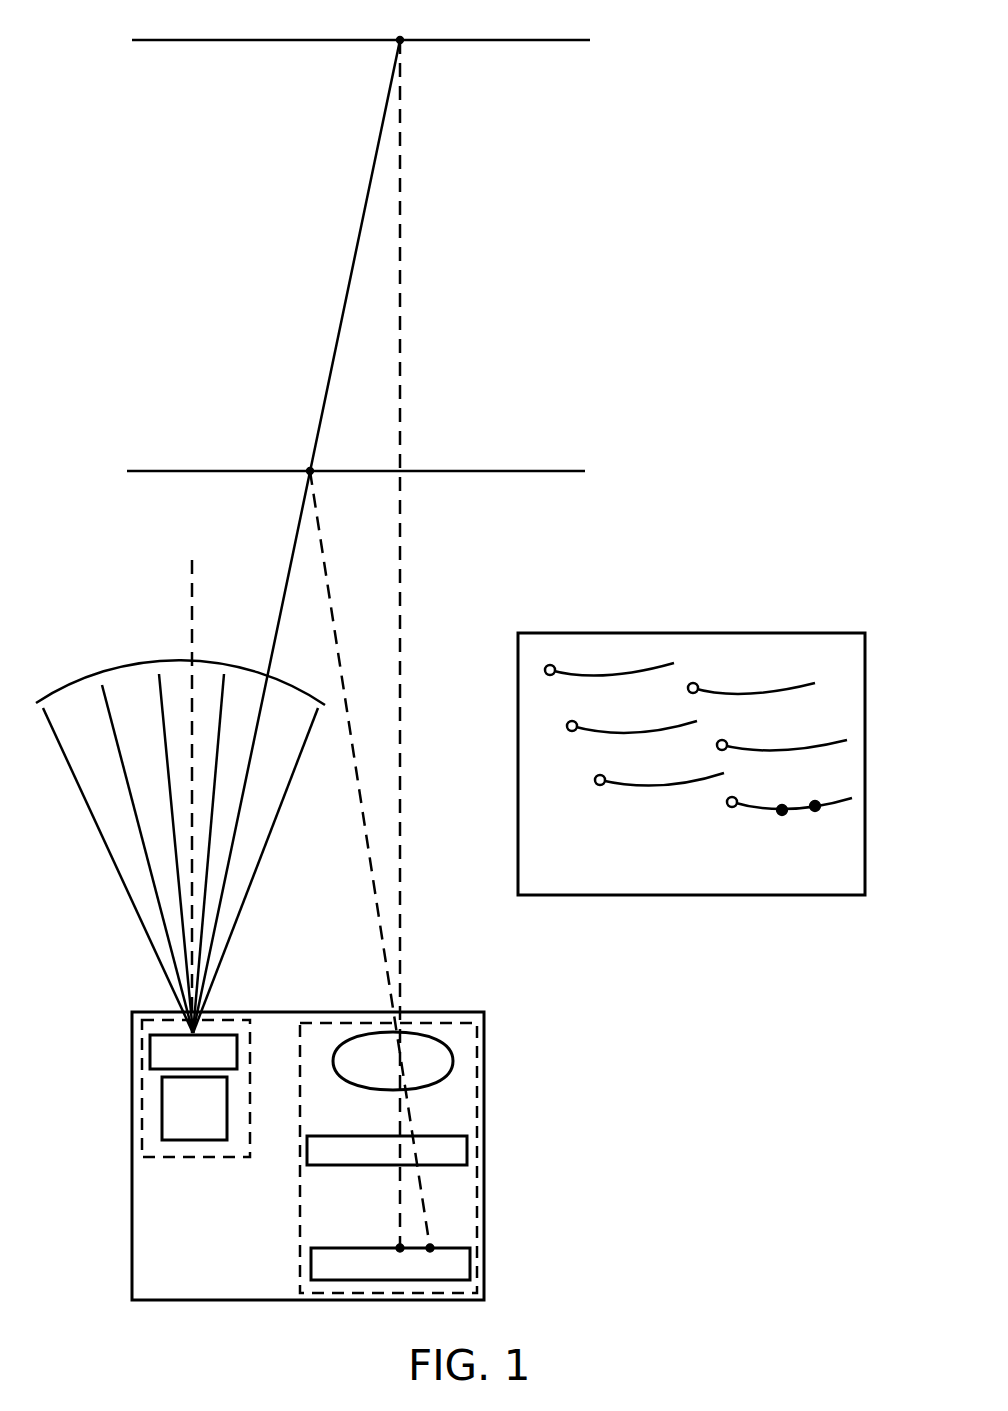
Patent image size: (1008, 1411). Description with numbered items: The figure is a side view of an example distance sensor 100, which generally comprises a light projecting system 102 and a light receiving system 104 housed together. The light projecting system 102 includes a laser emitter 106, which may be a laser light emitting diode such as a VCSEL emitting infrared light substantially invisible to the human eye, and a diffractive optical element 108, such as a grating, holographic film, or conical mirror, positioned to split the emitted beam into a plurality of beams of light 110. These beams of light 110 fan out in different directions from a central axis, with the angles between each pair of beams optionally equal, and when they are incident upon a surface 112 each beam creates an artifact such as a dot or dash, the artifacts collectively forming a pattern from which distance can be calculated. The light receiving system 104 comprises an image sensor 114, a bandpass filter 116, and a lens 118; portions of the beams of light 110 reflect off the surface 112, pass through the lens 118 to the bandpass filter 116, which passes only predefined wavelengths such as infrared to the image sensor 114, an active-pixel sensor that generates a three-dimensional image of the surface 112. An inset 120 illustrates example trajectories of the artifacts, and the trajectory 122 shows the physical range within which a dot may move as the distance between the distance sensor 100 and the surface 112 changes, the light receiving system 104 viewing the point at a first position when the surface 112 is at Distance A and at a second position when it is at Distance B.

The distance sensor 100 is at (132, 1213).
The light projecting system 102 is at (142, 1068).
The light receiving system 104 is at (477, 1100).
The laser emitter 106 is at (194, 1108).
The diffractive optical element 108 is at (193, 1052).
The plurality of beams of light 110 is at (95, 676).
The surface 112 is at (147, 40).
The image sensor 114 is at (390, 1264).
The bandpass filter 116 is at (387, 1150).
The lens 118 is at (393, 1061).
The inset 120 is at (778, 633).
The trajectory 122 is at (845, 800).